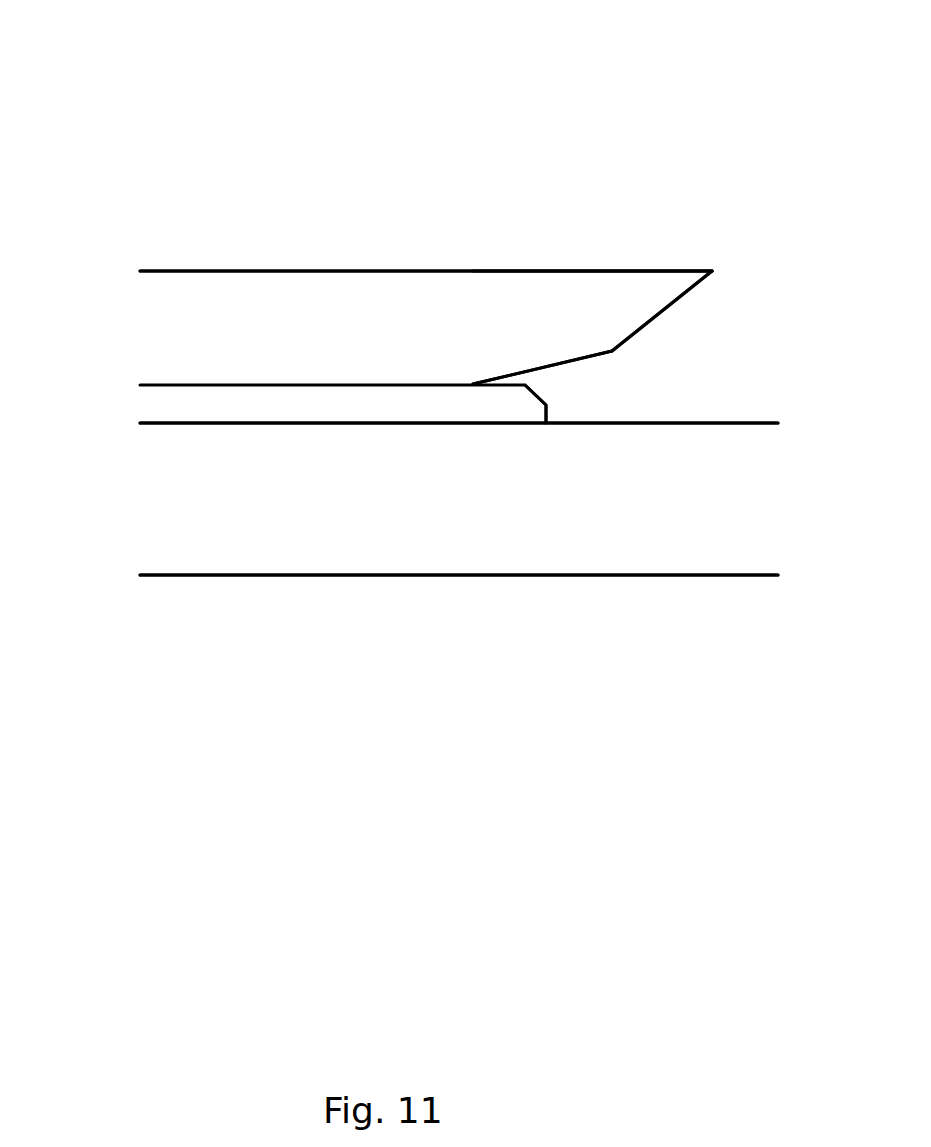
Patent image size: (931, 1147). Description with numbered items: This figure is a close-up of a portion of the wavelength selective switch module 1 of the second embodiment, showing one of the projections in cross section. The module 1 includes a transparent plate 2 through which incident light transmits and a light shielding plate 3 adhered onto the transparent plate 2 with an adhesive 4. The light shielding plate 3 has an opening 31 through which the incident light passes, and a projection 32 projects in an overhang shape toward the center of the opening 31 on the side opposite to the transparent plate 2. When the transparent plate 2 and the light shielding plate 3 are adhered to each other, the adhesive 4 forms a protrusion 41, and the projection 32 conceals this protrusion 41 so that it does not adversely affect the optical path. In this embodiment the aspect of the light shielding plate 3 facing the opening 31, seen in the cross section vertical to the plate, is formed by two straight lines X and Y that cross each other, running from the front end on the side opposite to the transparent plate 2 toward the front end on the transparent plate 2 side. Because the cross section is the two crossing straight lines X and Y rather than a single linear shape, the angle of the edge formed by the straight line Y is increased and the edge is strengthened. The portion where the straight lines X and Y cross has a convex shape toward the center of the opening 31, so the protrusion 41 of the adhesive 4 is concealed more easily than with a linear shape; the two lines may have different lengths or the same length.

The wavelength selective switch module 1 is at (312, 122).
The transparent plate 2 is at (158, 493).
The light shielding plate 3 is at (251, 285).
The adhesive 4 is at (158, 404).
The opening 31 is at (743, 278).
The projection 32 is at (600, 292).
The protrusion 41 is at (535, 405).
The straight line X is at (573, 362).
The straight line Y is at (663, 313).